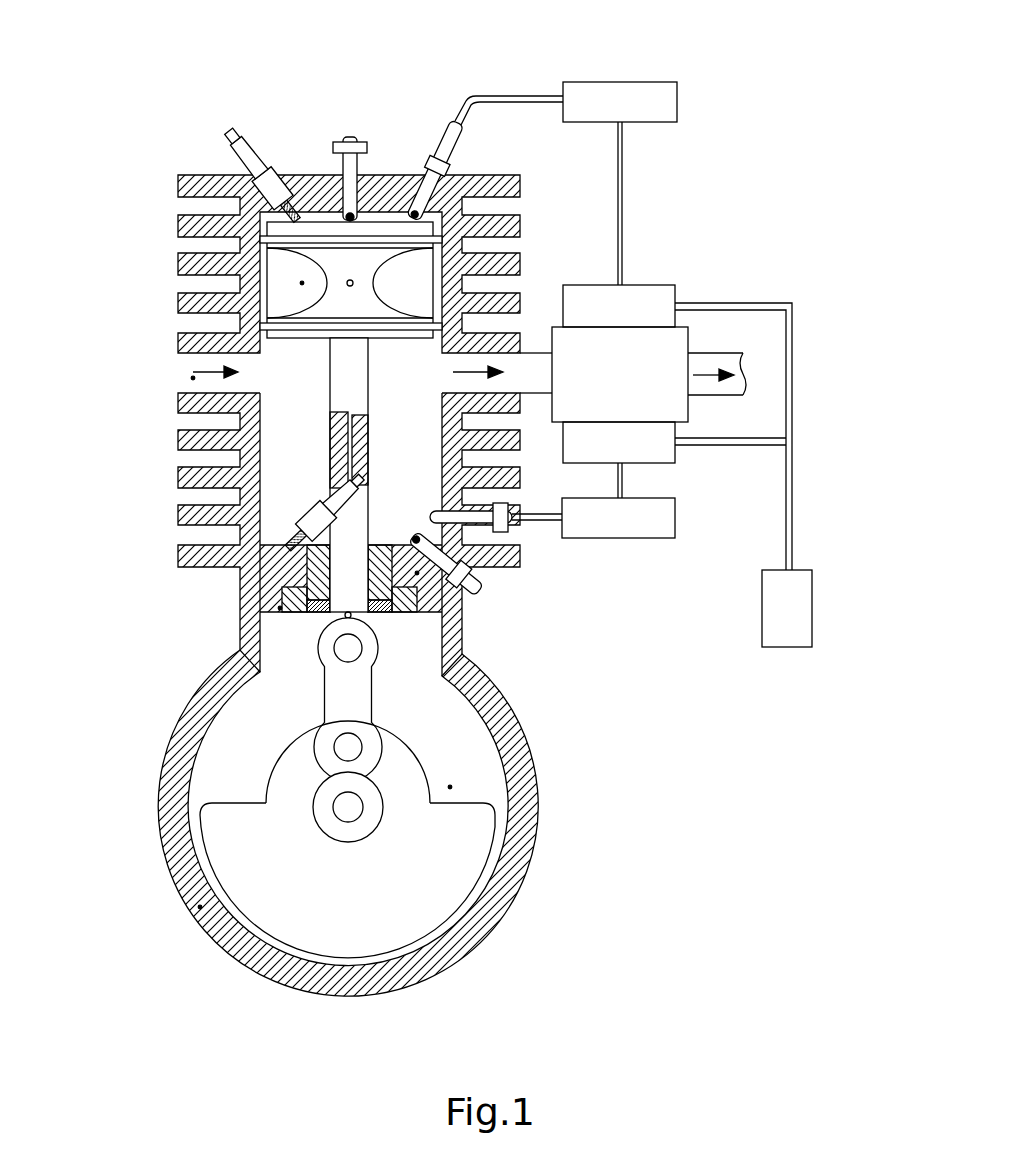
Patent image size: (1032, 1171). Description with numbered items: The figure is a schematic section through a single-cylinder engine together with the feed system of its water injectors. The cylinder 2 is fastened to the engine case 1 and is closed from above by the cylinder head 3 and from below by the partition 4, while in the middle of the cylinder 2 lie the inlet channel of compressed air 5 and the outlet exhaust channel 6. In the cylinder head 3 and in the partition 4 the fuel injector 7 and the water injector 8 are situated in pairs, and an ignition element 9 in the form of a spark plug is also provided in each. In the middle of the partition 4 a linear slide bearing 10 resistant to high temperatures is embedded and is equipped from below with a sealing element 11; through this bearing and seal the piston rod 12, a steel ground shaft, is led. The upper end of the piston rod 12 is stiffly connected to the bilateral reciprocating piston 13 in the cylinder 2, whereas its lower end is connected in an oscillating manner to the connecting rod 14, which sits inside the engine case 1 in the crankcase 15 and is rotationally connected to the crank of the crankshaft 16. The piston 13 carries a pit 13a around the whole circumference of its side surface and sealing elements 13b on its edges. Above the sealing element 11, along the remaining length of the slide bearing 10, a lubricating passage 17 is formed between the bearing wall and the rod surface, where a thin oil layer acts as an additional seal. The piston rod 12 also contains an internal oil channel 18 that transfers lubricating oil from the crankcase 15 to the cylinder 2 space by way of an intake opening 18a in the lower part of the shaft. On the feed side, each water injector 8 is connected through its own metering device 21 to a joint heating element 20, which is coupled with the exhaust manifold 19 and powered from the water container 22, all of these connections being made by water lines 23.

The engine case 1 is at (200, 907).
The cylinder 2 is at (497, 253).
The cylinder head 3 is at (307, 175).
The partition 4 is at (417, 573).
The inlet channel of compressed air 5 is at (193, 378).
The outlet exhaust channel 6 is at (518, 340).
The fuel injector 7 is at (347, 145).
The water injector 8 is at (447, 147).
The ignition element 9 is at (248, 165).
The linear slide bearing 10 is at (280, 608).
The sealing element 11 is at (346, 616).
The piston rod 12 is at (456, 705).
The bilateral reciprocating piston 13 is at (340, 258).
The pit 13a is at (302, 283).
The sealing elements 13b is at (337, 237).
The connecting rod 14 is at (357, 682).
The crankcase 15 is at (450, 787).
The crankshaft 16 is at (277, 822).
The lubricating passage 17 is at (455, 600).
The internal oil channel 18 is at (352, 455).
The intake opening 18a is at (348, 285).
The exhaust manifold 19 is at (628, 352).
The heating element 20 is at (622, 302).
The metering device 21 is at (603, 95).
The water container 22 is at (798, 600).
The water lines 23 is at (790, 418).